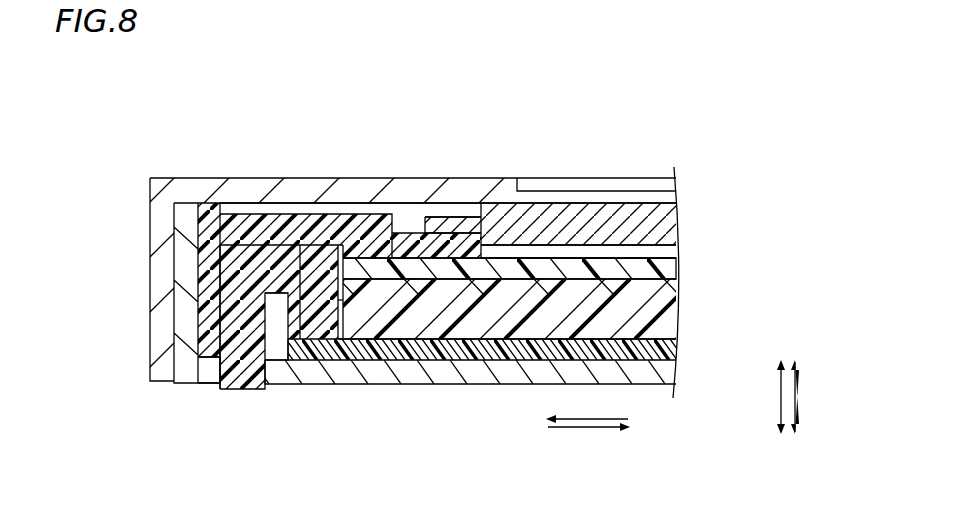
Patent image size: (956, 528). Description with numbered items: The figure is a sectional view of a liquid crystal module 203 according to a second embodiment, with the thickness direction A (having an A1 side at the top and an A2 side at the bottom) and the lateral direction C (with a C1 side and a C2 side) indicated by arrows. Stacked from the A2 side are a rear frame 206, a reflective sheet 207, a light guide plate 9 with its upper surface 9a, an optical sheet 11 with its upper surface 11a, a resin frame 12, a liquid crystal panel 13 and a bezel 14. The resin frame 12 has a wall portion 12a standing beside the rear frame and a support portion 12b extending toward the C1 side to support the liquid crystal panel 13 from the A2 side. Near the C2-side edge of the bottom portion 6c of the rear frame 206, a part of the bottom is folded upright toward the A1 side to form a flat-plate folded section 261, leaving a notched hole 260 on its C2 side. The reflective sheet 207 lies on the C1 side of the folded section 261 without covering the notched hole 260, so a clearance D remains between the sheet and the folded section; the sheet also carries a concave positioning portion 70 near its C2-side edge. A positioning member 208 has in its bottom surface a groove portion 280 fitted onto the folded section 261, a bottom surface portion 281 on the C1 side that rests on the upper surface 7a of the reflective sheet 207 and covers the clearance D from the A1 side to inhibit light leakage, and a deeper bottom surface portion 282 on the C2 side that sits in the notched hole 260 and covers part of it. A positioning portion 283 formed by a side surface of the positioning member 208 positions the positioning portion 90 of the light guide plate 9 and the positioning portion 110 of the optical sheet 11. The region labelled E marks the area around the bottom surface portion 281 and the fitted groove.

The liquid crystal module 203 is at (641, 123).
The bezel 14 is at (156, 184).
The groove portion 280 is at (198, 342).
The wall portion 12a is at (208, 256).
The notched hole 260 is at (207, 380).
The positioning member 208 is at (220, 295).
The rear frame 206 is at (222, 310).
The positioning portion of optical sheet 110 is at (319, 212).
The bottom surface portion 282 is at (238, 390).
The positioning portion of light guide plate 90 is at (328, 308).
The folded section 261 is at (280, 305).
The positioning portion 70 is at (266, 362).
The bottom surface portion 281 is at (312, 361).
The positioning portion 283 is at (350, 262).
The region E is at (345, 312).
The resin frame 12 is at (432, 171).
The support portion 12b is at (410, 247).
The liquid crystal panel 13 is at (658, 220).
The upper surface of optical sheet 11a is at (660, 256).
The optical sheet 11 is at (582, 258).
The upper surface of light guide plate 9a is at (660, 280).
The light guide plate 9 is at (655, 303).
The upper surface of reflective sheet 7a is at (658, 337).
The bottom portion 6c is at (678, 348).
The clearance D is at (292, 341).
The reflective sheet 207 is at (465, 361).
The direction C is at (588, 426).
The C1 side C1 is at (589, 412).
The C2 side C2 is at (587, 408).
The direction A is at (790, 397).
The A1 side A1 is at (768, 378).
The A2 side A2 is at (768, 415).